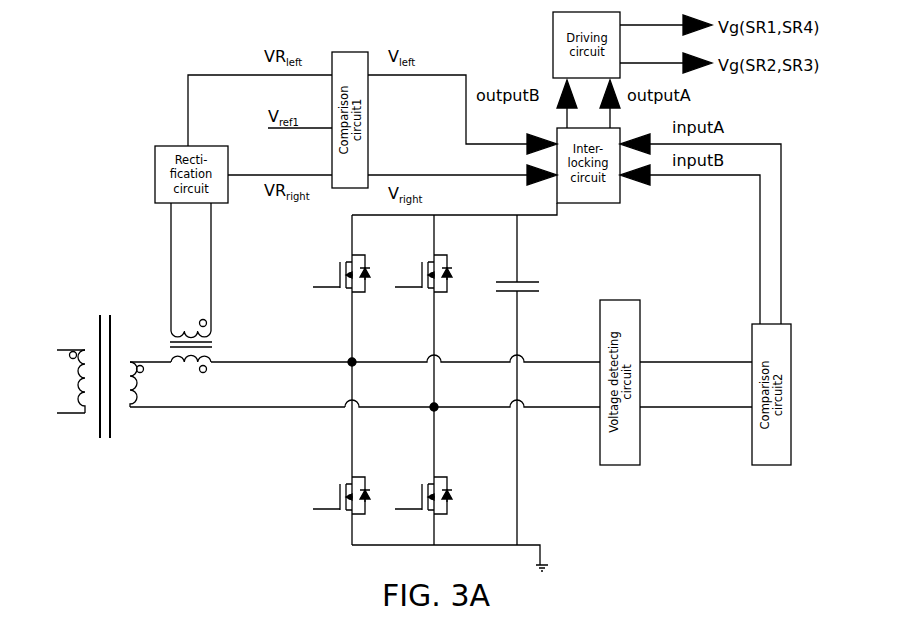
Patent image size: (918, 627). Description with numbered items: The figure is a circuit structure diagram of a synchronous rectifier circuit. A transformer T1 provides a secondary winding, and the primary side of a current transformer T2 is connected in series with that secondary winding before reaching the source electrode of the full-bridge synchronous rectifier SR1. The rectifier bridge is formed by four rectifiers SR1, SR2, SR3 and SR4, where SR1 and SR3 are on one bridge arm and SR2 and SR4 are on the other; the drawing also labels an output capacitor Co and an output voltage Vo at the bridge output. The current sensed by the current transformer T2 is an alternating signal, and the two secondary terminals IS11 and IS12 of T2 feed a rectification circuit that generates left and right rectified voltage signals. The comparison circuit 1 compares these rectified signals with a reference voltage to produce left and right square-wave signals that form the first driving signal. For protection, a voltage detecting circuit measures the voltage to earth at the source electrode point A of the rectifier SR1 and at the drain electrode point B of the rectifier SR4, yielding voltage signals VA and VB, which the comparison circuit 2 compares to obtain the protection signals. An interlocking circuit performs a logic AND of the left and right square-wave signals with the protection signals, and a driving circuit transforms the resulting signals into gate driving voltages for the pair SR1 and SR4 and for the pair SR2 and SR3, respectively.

The transformer T1 is at (99, 396).
The current transformer T2 is at (225, 297).
The comparison circuit 1 is at (237, 419).
The comparison circuit 2 is at (150, 351).
The secondary terminal IS11 is at (245, 332).
The secondary terminal IS12 is at (135, 298).
The synchronous rectifier SR1 is at (341, 265).
The synchronous rectifier SR2 is at (423, 265).
The synchronous rectifier SR3 is at (341, 487).
The synchronous rectifier SR4 is at (423, 487).
The source electrode point A is at (405, 353).
The drain electrode point B is at (472, 415).
The output capacitor Co is at (533, 380).
The output voltage Vo is at (552, 244).
The voltage signal VA is at (696, 353).
The voltage signal VB is at (696, 398).